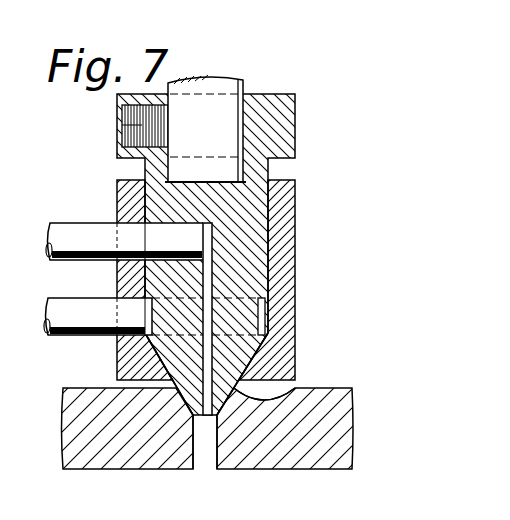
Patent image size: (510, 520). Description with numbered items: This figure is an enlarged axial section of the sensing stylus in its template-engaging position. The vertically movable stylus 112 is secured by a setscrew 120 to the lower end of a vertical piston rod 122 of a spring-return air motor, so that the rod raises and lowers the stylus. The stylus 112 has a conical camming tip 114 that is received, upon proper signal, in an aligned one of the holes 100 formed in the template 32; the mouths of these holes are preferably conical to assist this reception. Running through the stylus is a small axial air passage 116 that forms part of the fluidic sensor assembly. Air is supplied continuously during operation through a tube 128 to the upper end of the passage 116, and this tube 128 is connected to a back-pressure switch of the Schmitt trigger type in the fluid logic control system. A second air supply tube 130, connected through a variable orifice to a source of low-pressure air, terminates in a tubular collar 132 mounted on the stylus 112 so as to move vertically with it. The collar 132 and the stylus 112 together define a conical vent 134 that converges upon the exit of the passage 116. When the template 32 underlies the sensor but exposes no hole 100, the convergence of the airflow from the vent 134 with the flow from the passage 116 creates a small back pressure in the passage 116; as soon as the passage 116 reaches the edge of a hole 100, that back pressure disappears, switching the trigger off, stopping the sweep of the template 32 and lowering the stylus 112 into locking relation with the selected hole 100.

The template 32 is at (355, 422).
The hole 100 is at (205, 462).
The stylus 112 is at (295, 148).
The conical camming tip 114 is at (290, 394).
The axial air passage 116 is at (205, 240).
The setscrew 120 is at (121, 113).
The piston rod 122 is at (247, 90).
The tube 128 is at (80, 223).
The air supply tube 130 is at (84, 298).
The tubular collar 132 is at (297, 272).
The conical vent 134 is at (265, 352).